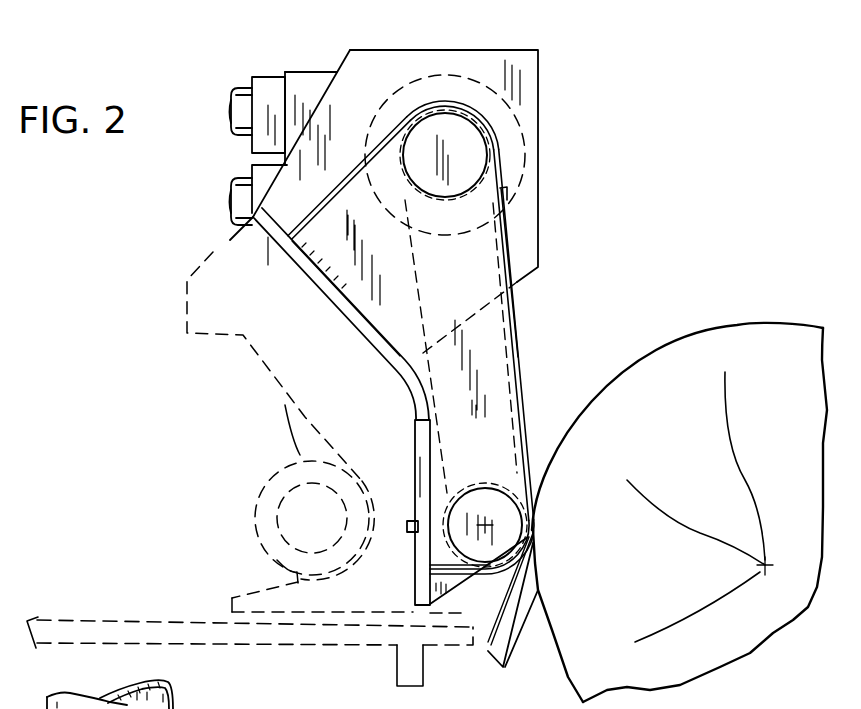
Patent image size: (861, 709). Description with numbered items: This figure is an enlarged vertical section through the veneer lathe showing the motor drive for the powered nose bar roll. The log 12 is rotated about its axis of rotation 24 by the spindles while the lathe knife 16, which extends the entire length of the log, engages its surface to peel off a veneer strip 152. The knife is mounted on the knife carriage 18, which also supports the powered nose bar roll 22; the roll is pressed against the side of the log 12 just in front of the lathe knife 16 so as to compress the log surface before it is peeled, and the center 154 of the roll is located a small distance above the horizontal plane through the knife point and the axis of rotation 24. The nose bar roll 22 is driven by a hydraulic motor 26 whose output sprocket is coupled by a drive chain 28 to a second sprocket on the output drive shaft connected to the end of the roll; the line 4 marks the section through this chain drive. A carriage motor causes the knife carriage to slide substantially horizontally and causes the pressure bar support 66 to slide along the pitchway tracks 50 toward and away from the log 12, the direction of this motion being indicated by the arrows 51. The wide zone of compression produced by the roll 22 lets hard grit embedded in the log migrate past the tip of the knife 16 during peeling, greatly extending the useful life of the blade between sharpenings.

The section line 4- 4 is at (438, 62).
The log 12 is at (684, 338).
The lathe knife 16 is at (520, 609).
The knife carriage 18 is at (200, 390).
The nose bar roll 22 is at (533, 523).
The axis of rotation 24 is at (768, 557).
The hydraulic motor 26 is at (526, 127).
The drive chain 28 is at (528, 354).
The pitchway tracks 50 is at (115, 617).
The arrows 51 is at (185, 605).
The pressure bar support 66 is at (217, 249).
The veneer strip 152 is at (508, 592).
The center of nose bar roll 154 is at (489, 522).